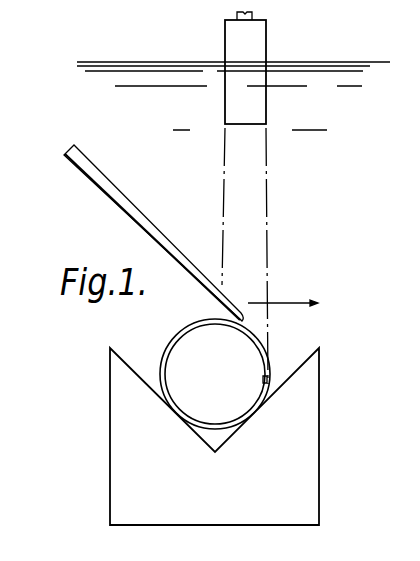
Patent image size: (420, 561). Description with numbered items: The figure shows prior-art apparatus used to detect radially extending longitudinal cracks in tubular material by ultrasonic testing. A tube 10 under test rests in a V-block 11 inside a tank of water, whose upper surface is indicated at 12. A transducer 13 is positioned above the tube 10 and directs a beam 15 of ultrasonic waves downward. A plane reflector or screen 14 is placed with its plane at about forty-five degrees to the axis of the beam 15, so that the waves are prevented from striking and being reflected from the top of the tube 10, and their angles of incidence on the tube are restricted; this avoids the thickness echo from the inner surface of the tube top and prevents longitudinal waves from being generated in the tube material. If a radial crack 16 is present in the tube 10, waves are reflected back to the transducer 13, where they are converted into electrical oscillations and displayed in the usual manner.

The tube 10 is at (173, 334).
The V-block 11 is at (127, 454).
The upper surface of water 12 is at (183, 62).
The transducer 13 is at (255, 102).
The plane reflector or screen 14 is at (143, 232).
The beam of ultrasonic waves 15 is at (258, 231).
The radial crack 16 is at (262, 381).